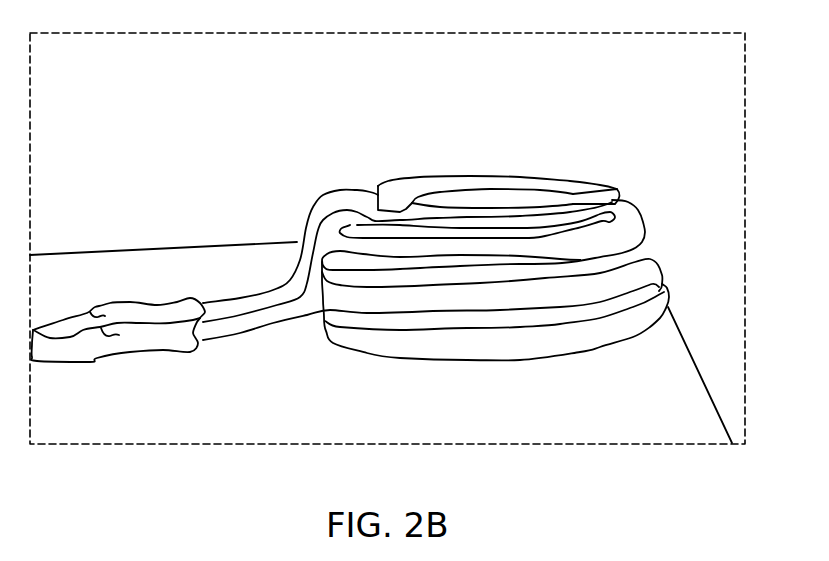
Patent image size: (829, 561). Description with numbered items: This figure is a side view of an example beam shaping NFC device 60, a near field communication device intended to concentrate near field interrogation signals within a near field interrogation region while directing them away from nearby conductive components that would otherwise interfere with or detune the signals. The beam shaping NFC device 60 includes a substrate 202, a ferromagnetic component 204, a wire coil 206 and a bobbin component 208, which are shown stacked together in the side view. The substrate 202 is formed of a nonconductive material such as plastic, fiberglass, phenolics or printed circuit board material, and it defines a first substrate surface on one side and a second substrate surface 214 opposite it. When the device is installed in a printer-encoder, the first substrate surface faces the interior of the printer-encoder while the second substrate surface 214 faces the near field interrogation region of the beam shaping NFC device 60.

The beam shaping NFC device 60 is at (118, 143).
The substrate 202 is at (158, 252).
The ferromagnetic component 204 is at (670, 288).
The wire coil 206 is at (640, 226).
The bobbin component 208 is at (488, 184).
The second substrate surface 214 is at (683, 355).